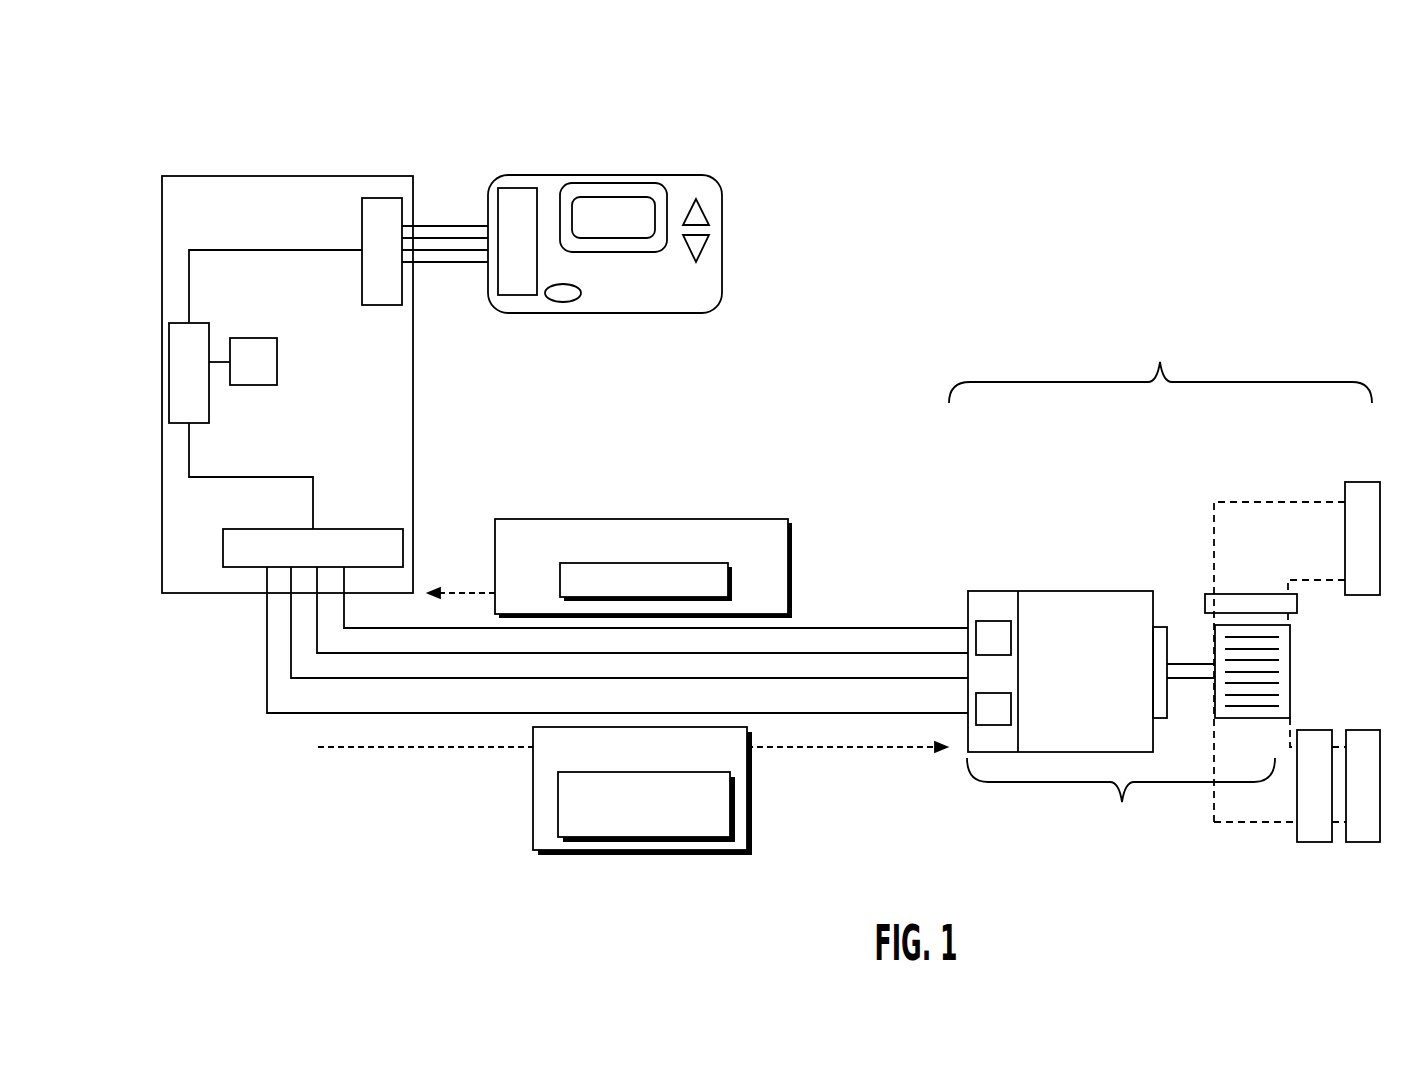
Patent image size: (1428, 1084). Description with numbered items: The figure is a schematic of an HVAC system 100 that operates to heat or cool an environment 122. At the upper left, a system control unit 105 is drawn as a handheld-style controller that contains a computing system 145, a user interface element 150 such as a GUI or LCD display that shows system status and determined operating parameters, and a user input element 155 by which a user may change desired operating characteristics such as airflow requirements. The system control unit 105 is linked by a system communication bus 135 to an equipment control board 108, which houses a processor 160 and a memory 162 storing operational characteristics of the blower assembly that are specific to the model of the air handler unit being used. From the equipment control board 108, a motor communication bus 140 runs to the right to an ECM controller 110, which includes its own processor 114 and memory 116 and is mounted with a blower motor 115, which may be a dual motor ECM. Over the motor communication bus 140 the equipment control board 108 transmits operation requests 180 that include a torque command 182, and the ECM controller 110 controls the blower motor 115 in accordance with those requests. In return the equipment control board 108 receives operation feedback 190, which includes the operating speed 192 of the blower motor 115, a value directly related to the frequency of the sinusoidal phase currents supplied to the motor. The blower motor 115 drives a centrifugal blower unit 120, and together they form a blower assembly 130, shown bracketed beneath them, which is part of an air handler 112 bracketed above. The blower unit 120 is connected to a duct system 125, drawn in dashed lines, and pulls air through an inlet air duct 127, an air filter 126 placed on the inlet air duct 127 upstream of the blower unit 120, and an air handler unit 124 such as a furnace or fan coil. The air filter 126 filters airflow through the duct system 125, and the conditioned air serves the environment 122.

The HVAC system 100 is at (177, 113).
The system control unit 105 is at (598, 175).
The equipment control board 108 is at (341, 176).
The ECM controller 110 is at (996, 598).
The air handler 112 is at (1160, 365).
The processor 114 is at (1005, 713).
The blower motor 115 is at (1118, 598).
The memory 116 is at (1005, 633).
The blower unit 120 is at (1228, 625).
The environment 122 is at (1370, 578).
The air handler unit 124 is at (1298, 603).
The duct system 125 is at (1324, 520).
The air filter 126 is at (1313, 830).
The inlet air duct 127 is at (1362, 830).
The blower assembly 130 is at (1121, 797).
The system communication bus 135 is at (438, 226).
The motor communication bus 140 is at (267, 626).
The computing system 145 is at (513, 188).
The user interface element 150 is at (615, 252).
The user input element 155 is at (698, 210).
The processor 160 is at (183, 365).
The memory 162 is at (258, 386).
The operation requests 180 is at (755, 830).
The torque command 182 is at (735, 790).
The operation feedback 190 is at (792, 531).
The operating speed 192 is at (733, 580).